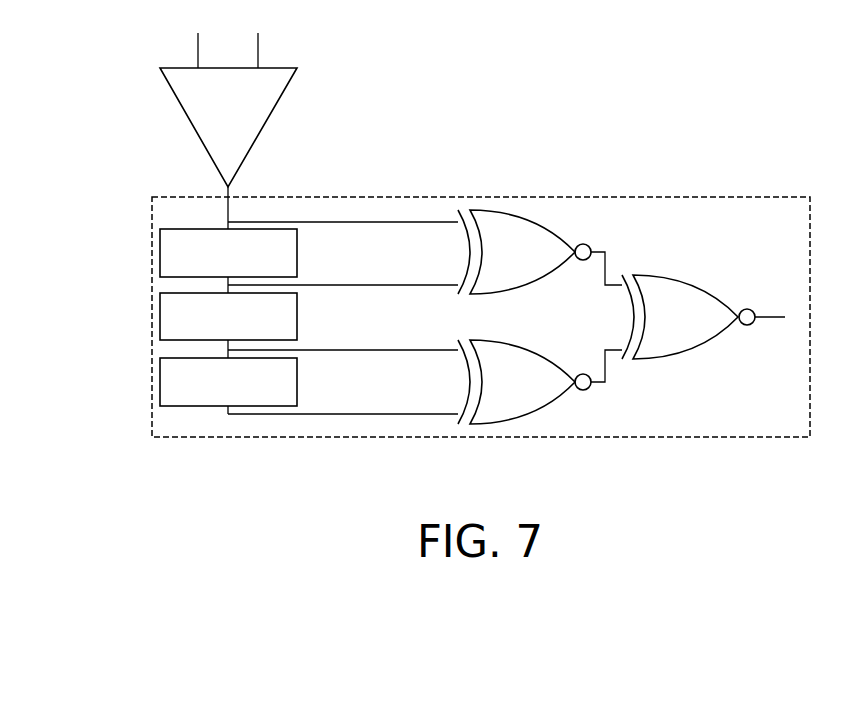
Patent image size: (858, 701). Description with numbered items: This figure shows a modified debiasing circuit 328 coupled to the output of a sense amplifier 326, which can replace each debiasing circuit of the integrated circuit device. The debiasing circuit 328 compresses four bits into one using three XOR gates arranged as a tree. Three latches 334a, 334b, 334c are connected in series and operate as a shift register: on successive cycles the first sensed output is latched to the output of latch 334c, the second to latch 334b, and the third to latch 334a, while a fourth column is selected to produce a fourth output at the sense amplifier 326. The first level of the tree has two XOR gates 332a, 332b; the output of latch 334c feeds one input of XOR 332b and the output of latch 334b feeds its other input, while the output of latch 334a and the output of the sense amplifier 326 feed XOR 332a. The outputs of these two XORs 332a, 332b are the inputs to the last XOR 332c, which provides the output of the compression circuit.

The sense amplifier 326 is at (265, 128).
The debiasing circuit 328 is at (763, 197).
The XOR gate 332a is at (500, 208).
The XOR gate 332b is at (505, 425).
The XOR gate 332c is at (708, 348).
The latch 334a is at (160, 253).
The latch 334b is at (160, 317).
The latch 334c is at (160, 382).